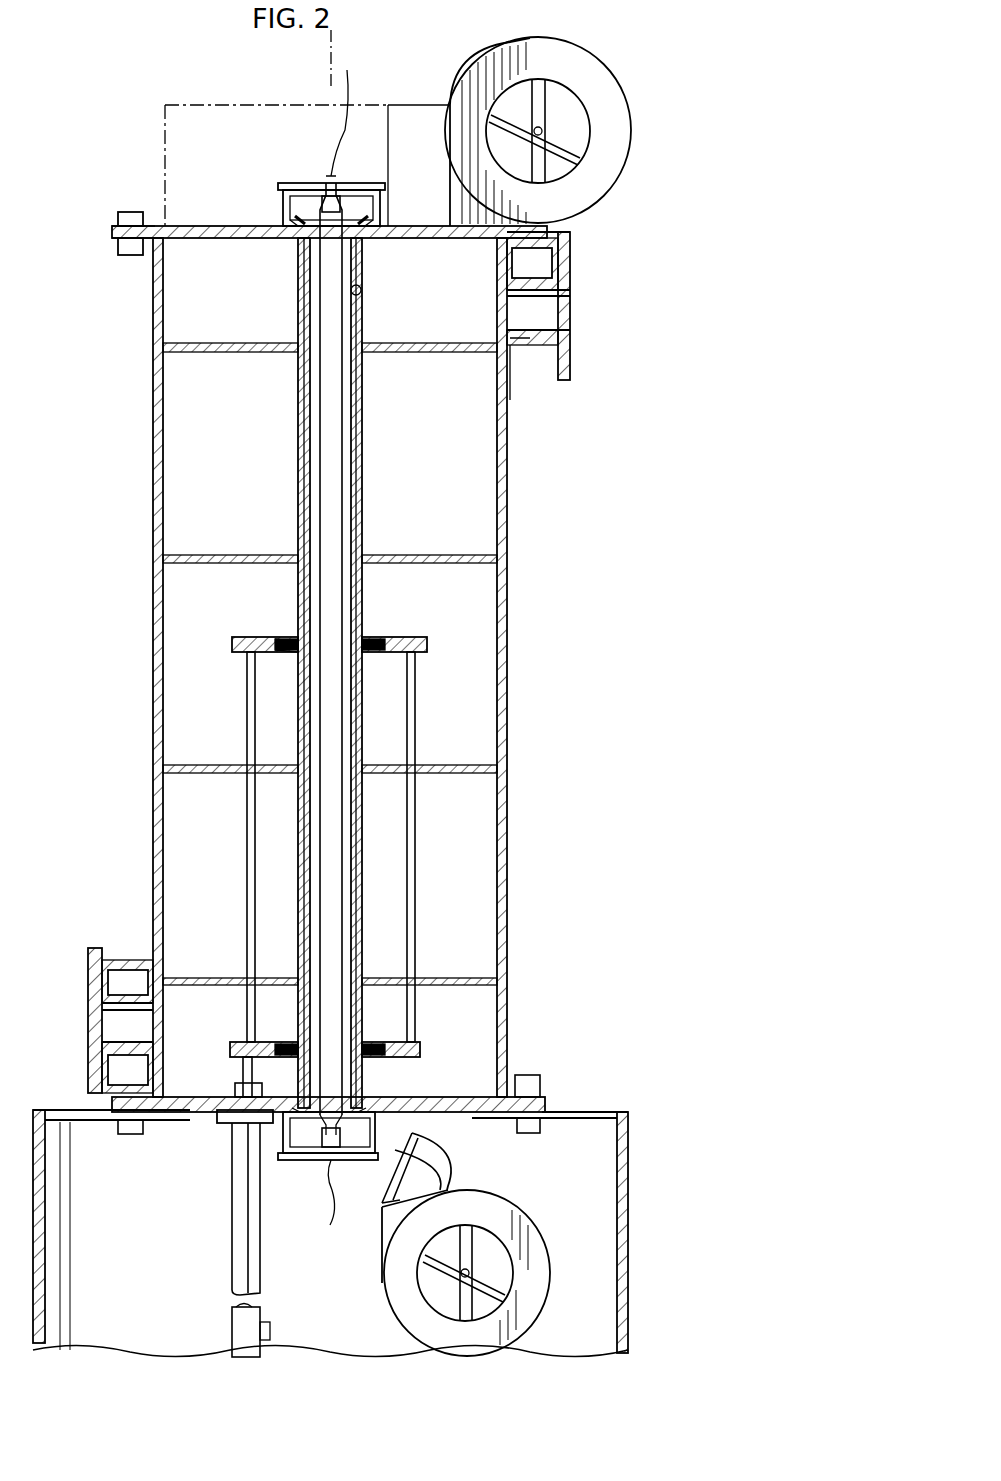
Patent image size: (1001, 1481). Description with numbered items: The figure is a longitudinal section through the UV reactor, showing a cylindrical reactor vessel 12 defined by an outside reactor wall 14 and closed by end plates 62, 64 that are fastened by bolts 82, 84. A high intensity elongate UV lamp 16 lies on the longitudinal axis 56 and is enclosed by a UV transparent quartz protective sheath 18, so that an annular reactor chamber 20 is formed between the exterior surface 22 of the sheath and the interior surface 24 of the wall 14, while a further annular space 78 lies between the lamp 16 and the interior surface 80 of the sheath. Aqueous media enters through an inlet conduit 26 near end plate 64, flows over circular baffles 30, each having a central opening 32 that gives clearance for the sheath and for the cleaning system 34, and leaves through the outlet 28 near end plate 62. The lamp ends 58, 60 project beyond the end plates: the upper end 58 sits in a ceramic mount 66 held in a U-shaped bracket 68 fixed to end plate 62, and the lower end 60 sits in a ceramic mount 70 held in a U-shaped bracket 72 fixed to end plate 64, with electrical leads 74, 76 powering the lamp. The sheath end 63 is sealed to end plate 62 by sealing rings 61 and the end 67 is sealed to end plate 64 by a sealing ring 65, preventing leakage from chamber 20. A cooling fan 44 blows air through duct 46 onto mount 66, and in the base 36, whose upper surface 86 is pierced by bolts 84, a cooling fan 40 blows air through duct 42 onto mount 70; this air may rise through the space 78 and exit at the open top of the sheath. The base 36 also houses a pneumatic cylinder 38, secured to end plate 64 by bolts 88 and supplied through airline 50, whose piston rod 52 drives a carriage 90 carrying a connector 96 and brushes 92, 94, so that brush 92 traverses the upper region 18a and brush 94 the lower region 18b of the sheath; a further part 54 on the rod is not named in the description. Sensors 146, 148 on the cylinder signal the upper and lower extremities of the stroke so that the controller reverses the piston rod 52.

The reactor vessel 12 is at (528, 852).
The outside reactor wall 14 is at (508, 600).
The high intensity elongate lamp 16 is at (332, 462).
The protective sheath 18 is at (354, 673).
The upper region of the sheath 18a is at (298, 462).
The lower region of the sheath 18b is at (362, 806).
The annular reactor chamber 20 is at (185, 610).
The exterior surface of the protective sheath 22 is at (298, 395).
The interior surface of the reactor outside wall 24 is at (497, 670).
The inlet conduit 26 is at (130, 1000).
The outlet 28 is at (535, 360).
The baffles 30 is at (470, 555).
The central opening 32 is at (240, 555).
The sheath cleaning system 34 is at (340, 623).
The base 36 is at (640, 1280).
The pneumatic cylinder 38 is at (240, 1233).
The cooling fan 40 is at (535, 1258).
The duct 42 is at (450, 1165).
The cooling fan 44 is at (600, 95).
The duct 46 is at (430, 105).
The airline 50 is at (210, 1155).
The piston rod 52 is at (240, 1070).
The nut 54 is at (235, 1090).
The longitudinal axis 56 is at (331, 80).
The lamp end 58 is at (318, 255).
The lamp end 60 is at (355, 1095).
The sealing rings 61 is at (345, 205).
The end plate 62 is at (205, 226).
The end of the quartz tube 63 is at (368, 238).
The end plate 64 is at (498, 1097).
The sealing ring 65 is at (385, 1118).
The ceramic mount 66 is at (350, 186).
The end of the quartz tube 67 is at (420, 1108).
The U-shaped bracket 68 is at (380, 150).
The ceramic mount 70 is at (405, 1168).
The U-shaped bracket 72 is at (337, 1165).
The electrical lead 74 is at (348, 80).
The electrical lead 76 is at (330, 1225).
The annular space 78 is at (348, 540).
The interior surface of the protective sheath 80 is at (375, 290).
The bolts 82 is at (130, 256).
The bolts 84 is at (545, 1085).
The support base upper surface 86 is at (600, 1112).
The bolts 88 is at (210, 1115).
The carriage 90 is at (243, 830).
The brush 92 is at (285, 637).
The brush 94 is at (265, 1040).
The connector 96 is at (245, 1042).
The sensor 146 is at (265, 1130).
The sensor 148 is at (245, 1325).